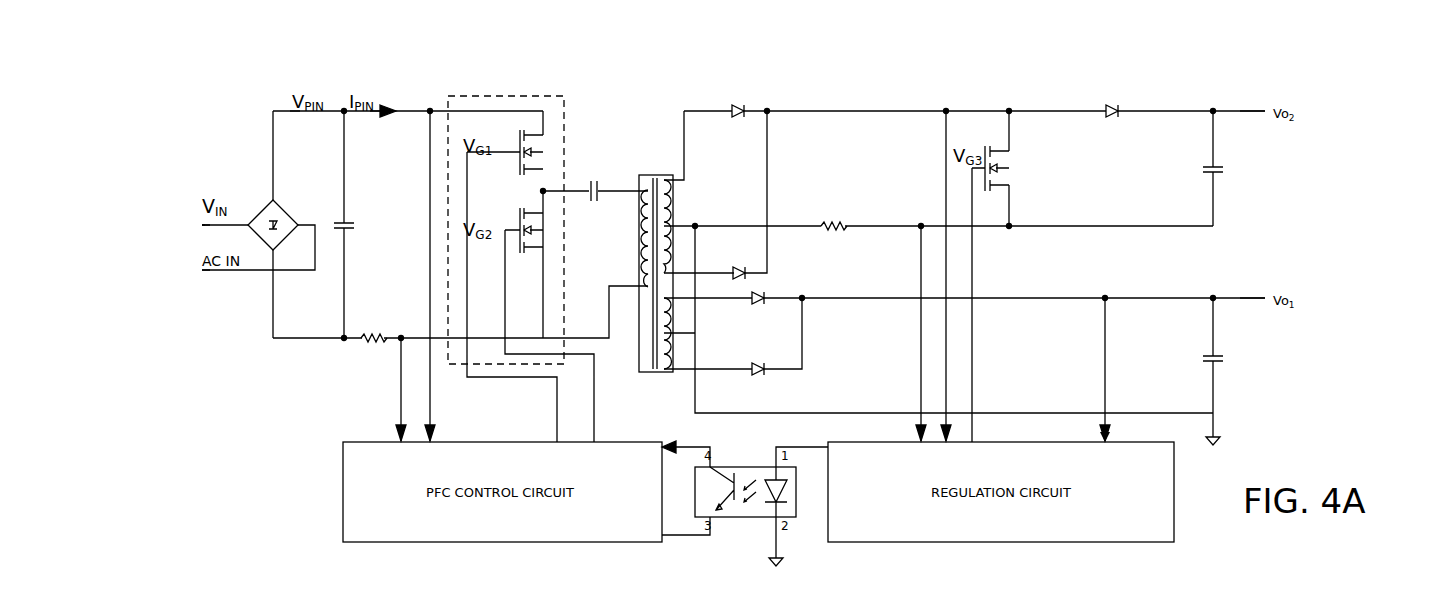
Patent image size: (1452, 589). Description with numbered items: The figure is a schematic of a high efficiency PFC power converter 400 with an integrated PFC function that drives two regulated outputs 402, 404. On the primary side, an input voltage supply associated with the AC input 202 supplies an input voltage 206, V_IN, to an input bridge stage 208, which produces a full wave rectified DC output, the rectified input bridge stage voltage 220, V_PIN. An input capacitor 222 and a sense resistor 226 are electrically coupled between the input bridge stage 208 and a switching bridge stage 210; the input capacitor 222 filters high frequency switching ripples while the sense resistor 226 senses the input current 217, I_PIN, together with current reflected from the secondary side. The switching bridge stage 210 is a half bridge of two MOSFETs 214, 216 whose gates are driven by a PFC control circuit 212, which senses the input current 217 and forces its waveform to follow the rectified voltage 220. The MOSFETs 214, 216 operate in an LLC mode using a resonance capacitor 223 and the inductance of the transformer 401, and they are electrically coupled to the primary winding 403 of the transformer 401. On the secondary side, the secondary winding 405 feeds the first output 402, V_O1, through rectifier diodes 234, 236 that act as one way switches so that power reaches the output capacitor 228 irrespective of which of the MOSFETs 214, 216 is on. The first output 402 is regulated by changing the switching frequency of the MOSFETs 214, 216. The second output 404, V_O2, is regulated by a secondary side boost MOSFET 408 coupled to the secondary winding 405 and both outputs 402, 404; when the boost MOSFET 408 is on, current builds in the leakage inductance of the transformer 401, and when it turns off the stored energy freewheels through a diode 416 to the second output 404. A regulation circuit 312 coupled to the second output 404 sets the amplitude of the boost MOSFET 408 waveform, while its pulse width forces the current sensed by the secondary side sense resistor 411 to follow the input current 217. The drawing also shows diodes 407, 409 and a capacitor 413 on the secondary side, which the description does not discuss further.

The PFC power converter 400 is at (226, 146).
The AC input 202 is at (217, 252).
The input voltage 206 is at (212, 191).
The input bridge stage 208 is at (286, 219).
The switching bridge stage 210 is at (564, 97).
The PFC control circuit 212 is at (502, 492).
The MOSFET 214 is at (517, 138).
The MOSFET 216 is at (517, 216).
The input current 217 is at (364, 96).
The rectified input bridge stage voltage 220 is at (282, 95).
The input capacitor 222 is at (353, 224).
The resonance capacitor 223 is at (597, 202).
The sense resistor 226 is at (376, 330).
The output capacitor 228 is at (1202, 355).
The diode 234 is at (765, 294).
The diode 236 is at (758, 360).
The regulation circuit 312 is at (1001, 492).
The transformer 401 is at (655, 174).
The first output 402 is at (1279, 285).
The primary winding 403 is at (640, 264).
The second output Vo2 404 is at (1279, 98).
The secondary winding 405 is at (674, 205).
The diode 407 is at (740, 104).
The boost MOSFET 408 is at (983, 144).
The diode 409 is at (733, 268).
The secondary side sense resistor 411 is at (834, 222).
The output capacitor 413 is at (1202, 165).
The diode 416 is at (1111, 104).